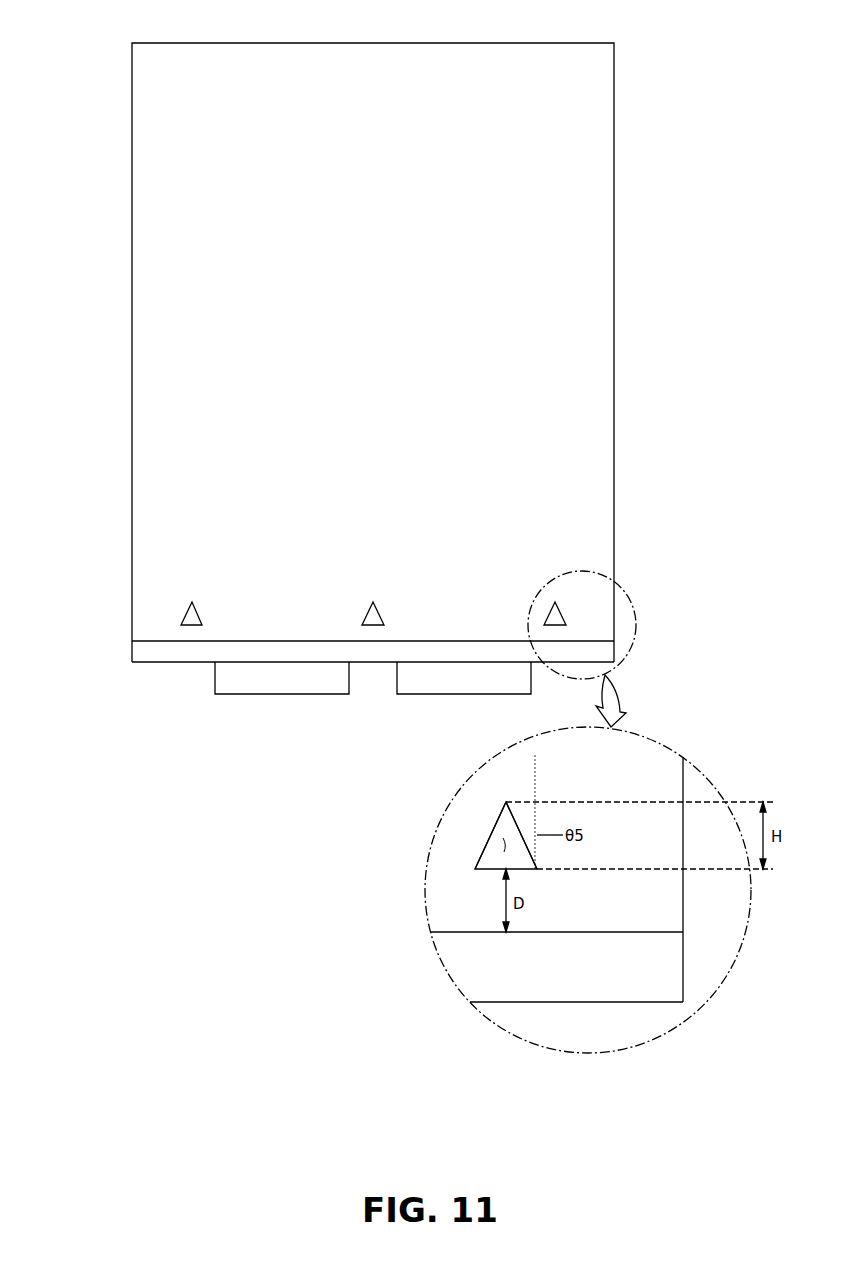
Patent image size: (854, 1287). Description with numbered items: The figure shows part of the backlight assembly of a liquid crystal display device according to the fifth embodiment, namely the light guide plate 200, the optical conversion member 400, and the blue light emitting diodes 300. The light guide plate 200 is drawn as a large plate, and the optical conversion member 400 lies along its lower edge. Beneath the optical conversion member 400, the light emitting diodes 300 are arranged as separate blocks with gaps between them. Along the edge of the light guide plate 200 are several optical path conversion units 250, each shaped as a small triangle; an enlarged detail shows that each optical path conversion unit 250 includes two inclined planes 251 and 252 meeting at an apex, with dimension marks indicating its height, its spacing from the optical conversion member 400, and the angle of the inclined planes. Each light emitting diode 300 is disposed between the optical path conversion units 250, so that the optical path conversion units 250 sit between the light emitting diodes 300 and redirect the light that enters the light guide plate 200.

The light guide plate 200 is at (138, 464).
The optical conversion member 400 is at (138, 652).
The light emitting diode 300 is at (222, 680).
The optical path conversion unit 250 is at (491, 838).
The inclined plane 251 is at (522, 822).
The inclined plane 252 is at (492, 823).